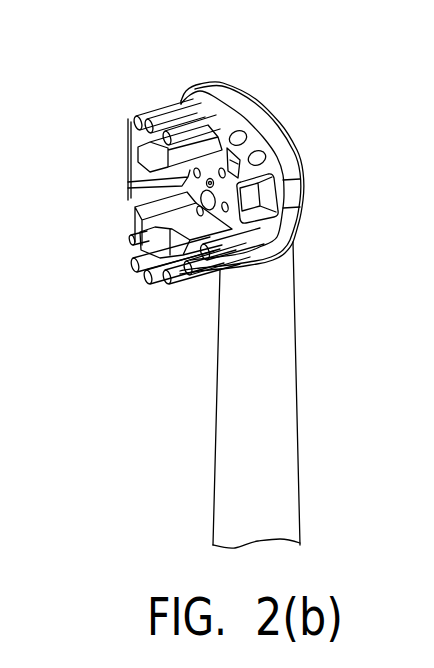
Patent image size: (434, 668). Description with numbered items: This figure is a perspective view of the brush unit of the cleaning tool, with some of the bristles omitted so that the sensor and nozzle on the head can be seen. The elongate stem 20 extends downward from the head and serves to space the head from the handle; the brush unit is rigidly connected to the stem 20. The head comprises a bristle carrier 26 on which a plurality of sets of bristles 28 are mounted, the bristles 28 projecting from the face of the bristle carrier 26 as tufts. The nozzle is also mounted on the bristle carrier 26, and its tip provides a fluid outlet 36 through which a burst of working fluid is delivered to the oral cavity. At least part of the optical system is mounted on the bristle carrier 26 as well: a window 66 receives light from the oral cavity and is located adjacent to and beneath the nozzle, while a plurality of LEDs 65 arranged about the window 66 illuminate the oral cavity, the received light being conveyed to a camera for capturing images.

The stem 20 is at (282, 453).
The bristle carrier 26 is at (285, 153).
The bristles 28 is at (133, 265).
The fluid outlet 36 is at (209, 181).
The LEDs 65 is at (230, 204).
The window 66 is at (187, 180).